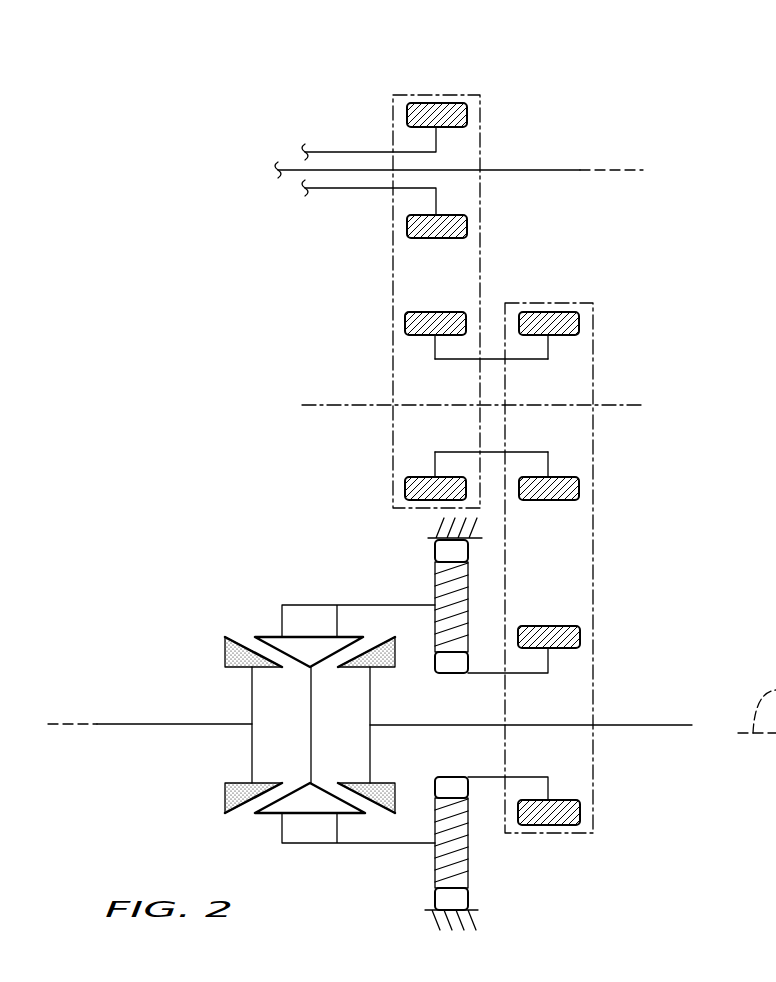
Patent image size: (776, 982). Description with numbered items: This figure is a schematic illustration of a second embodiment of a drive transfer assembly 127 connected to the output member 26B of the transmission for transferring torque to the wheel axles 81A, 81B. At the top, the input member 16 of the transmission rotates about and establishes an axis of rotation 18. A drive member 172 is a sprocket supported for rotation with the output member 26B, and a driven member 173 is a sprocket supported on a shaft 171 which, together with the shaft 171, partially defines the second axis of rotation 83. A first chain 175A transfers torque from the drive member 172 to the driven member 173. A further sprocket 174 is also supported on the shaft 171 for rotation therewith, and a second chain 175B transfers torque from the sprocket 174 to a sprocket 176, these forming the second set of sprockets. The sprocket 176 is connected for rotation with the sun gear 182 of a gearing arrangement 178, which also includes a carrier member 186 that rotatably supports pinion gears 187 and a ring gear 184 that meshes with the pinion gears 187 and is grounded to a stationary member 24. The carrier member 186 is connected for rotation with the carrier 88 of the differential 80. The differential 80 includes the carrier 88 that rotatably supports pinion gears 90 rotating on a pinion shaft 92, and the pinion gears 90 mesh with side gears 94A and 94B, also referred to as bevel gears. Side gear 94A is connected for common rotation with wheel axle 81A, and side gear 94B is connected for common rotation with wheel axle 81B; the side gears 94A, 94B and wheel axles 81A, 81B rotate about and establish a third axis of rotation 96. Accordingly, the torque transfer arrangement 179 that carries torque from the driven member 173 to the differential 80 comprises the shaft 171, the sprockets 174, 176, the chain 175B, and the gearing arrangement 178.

The input member 16 is at (530, 170).
The axis of rotation 18 is at (620, 170).
The stationary member 24 is at (415, 522).
The output member 26B is at (347, 152).
The differential 80 is at (208, 580).
The wheel axle 81A is at (152, 724).
The wheel axle 81B is at (627, 725).
The second axis of rotation 83 is at (640, 405).
The carrier 88 is at (282, 620).
The pinion gears 90 is at (270, 818).
The pinion shaft 92 is at (311, 697).
The side gear 94A is at (225, 797).
The side gear 94B is at (370, 783).
The third axis of rotation 96 is at (72, 724).
The drive transfer assembly 127 is at (652, 336).
The shaft 171 is at (493, 359).
The drive member 172 is at (467, 115).
The driven member 173 is at (405, 325).
The sprocket 174 is at (579, 323).
The chain 175A is at (390, 290).
The chain 175B is at (593, 548).
The sprocket 176 is at (580, 637).
The gearing arrangement 178 is at (489, 849).
The torque transfer arrangement 179 is at (594, 250).
The sun gear 182 is at (450, 675).
The ring gear 184 is at (470, 552).
The carrier member 186 is at (388, 605).
The pinion gears 187 is at (470, 605).